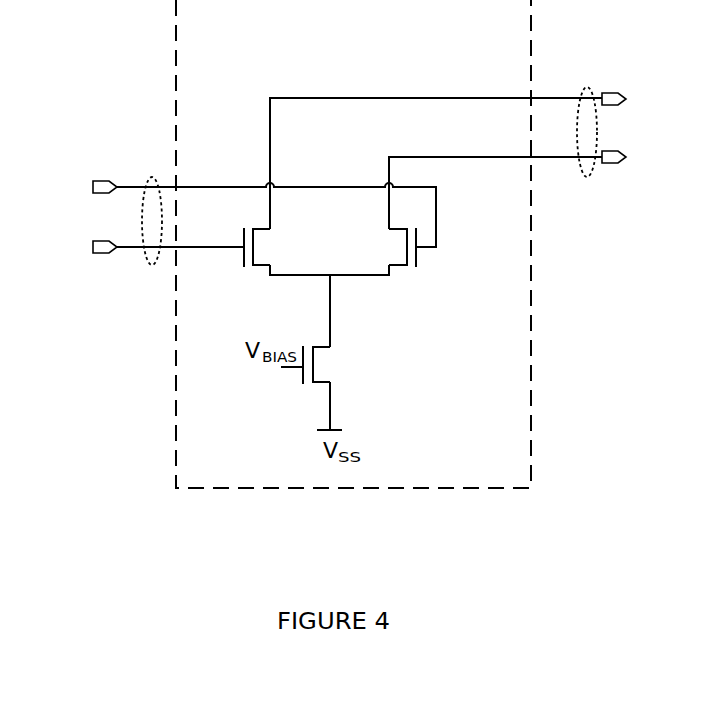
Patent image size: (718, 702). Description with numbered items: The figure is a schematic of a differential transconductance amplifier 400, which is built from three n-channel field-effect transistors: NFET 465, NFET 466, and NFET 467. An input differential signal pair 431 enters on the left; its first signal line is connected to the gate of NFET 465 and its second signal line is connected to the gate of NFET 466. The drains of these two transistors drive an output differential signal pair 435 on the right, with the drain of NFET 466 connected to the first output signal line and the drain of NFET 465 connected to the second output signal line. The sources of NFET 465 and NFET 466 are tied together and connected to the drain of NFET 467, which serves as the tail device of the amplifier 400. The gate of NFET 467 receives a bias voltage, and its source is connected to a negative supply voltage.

The differential transconductance amplifier 400 is at (374, 57).
The input differential signal pair 431 is at (150, 176).
The output differential signal pair 435 is at (587, 88).
The n-channel field-effect transistor 465 is at (399, 266).
The n-channel field-effect transistor 466 is at (262, 266).
The n-channel field-effect transistor 467 is at (320, 350).